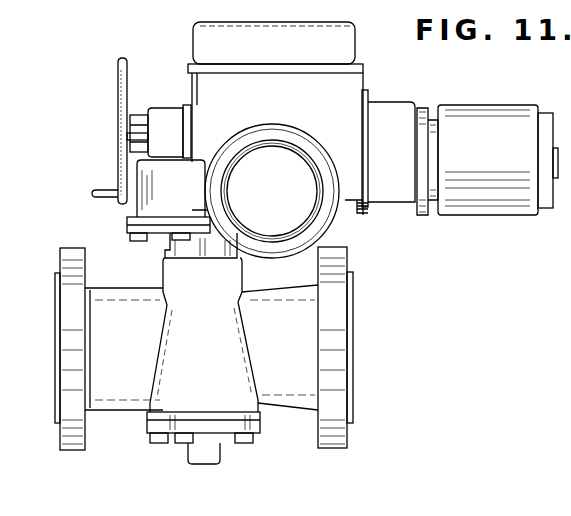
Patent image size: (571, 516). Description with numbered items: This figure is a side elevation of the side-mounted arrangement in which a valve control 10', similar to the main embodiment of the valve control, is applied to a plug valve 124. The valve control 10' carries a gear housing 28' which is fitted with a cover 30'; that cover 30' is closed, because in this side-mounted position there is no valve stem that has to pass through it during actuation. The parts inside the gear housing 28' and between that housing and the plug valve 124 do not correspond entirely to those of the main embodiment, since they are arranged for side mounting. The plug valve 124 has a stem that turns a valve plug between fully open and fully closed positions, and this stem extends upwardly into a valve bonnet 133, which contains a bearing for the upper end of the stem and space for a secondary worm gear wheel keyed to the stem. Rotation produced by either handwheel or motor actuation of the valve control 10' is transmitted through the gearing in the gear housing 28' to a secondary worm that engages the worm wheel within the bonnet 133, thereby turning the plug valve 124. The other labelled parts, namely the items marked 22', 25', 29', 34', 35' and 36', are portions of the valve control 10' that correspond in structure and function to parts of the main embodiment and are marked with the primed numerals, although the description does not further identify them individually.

The valve control 10' is at (278, 139).
The motor 22' is at (493, 160).
The gear box 25' is at (395, 152).
The gear housing 28' is at (295, 191).
The housing top cover 29' is at (250, 43).
The cover 30' is at (303, 197).
The limit switch 34' is at (165, 119).
The indicator plate 35' is at (73, 131).
The bolt 36' is at (84, 140).
The plug valve 124 is at (216, 356).
The valve bonnet 133 is at (152, 203).